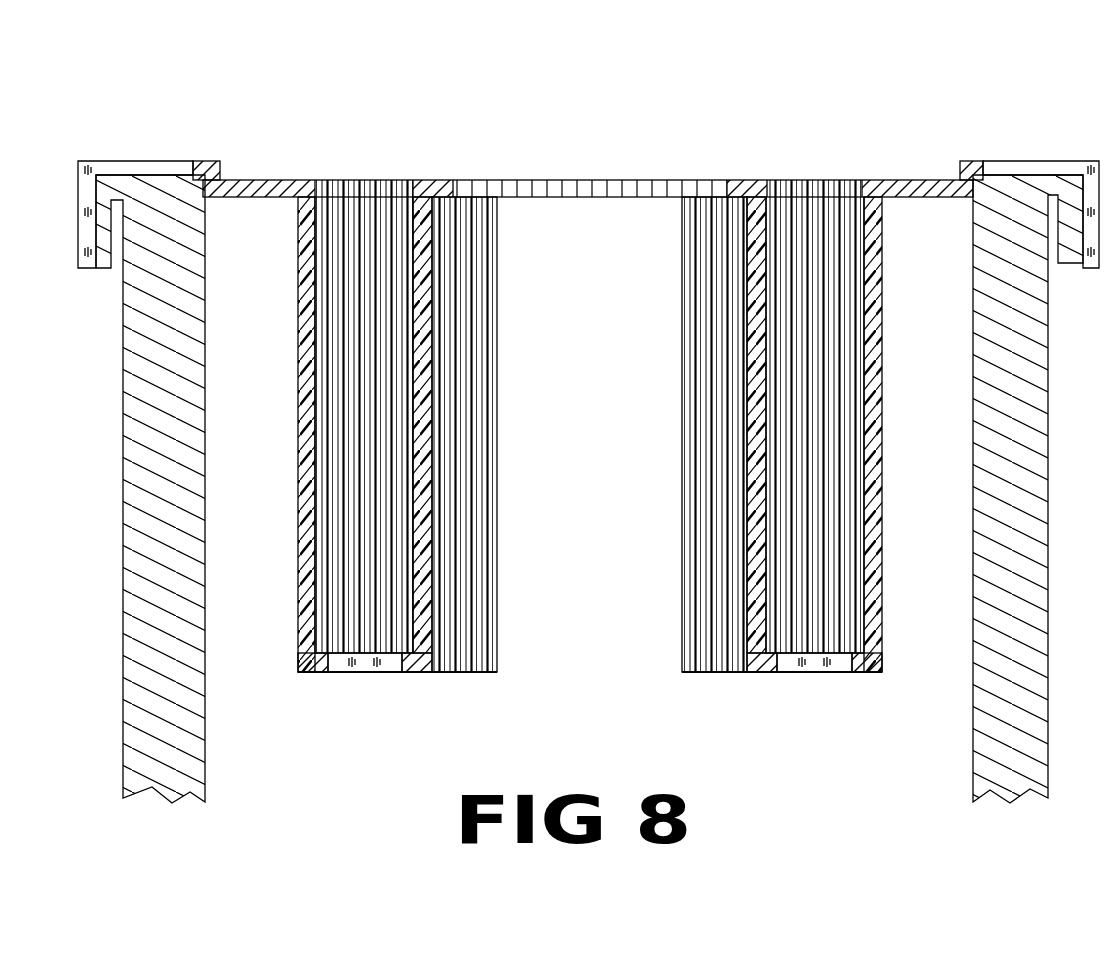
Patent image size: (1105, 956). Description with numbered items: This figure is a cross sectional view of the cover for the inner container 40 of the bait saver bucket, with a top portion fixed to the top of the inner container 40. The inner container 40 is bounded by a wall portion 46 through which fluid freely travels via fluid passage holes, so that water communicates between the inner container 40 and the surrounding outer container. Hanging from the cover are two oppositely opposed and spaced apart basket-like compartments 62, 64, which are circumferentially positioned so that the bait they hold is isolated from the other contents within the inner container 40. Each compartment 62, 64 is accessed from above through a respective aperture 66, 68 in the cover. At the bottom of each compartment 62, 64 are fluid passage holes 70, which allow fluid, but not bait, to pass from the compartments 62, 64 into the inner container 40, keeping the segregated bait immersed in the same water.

The inner container 40 is at (962, 160).
The wall portion 46 is at (205, 682).
The compartment 62 is at (888, 385).
The compartment 64 is at (295, 377).
The aperture 66 is at (815, 178).
The aperture 68 is at (367, 177).
The fluid passage holes 70 is at (375, 672).